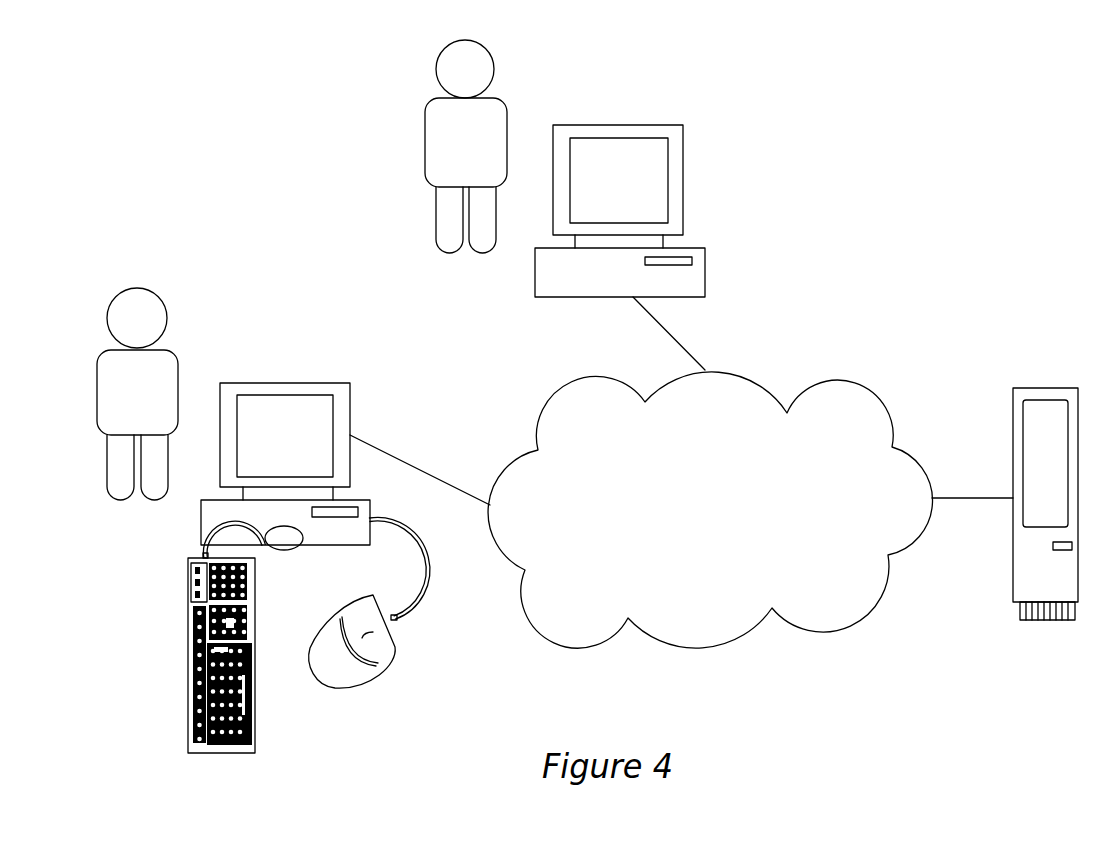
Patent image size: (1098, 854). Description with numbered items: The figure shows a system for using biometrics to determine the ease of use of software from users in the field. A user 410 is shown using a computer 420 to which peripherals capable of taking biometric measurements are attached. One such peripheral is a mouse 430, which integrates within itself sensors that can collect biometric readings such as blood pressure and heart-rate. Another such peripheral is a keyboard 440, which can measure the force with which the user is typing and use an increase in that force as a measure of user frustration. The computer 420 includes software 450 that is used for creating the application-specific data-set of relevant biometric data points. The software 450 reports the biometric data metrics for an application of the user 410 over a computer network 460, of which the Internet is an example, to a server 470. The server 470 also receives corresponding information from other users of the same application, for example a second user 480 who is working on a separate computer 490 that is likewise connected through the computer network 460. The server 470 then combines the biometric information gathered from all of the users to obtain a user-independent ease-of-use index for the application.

The user 410 is at (138, 288).
The computer 420 is at (278, 382).
The mouse 430 is at (389, 658).
The keyboard 440 is at (188, 625).
The software 450 is at (283, 551).
The computer network 460 is at (752, 628).
The server 470 is at (1047, 387).
The user 480 is at (425, 118).
The computer 490 is at (617, 125).